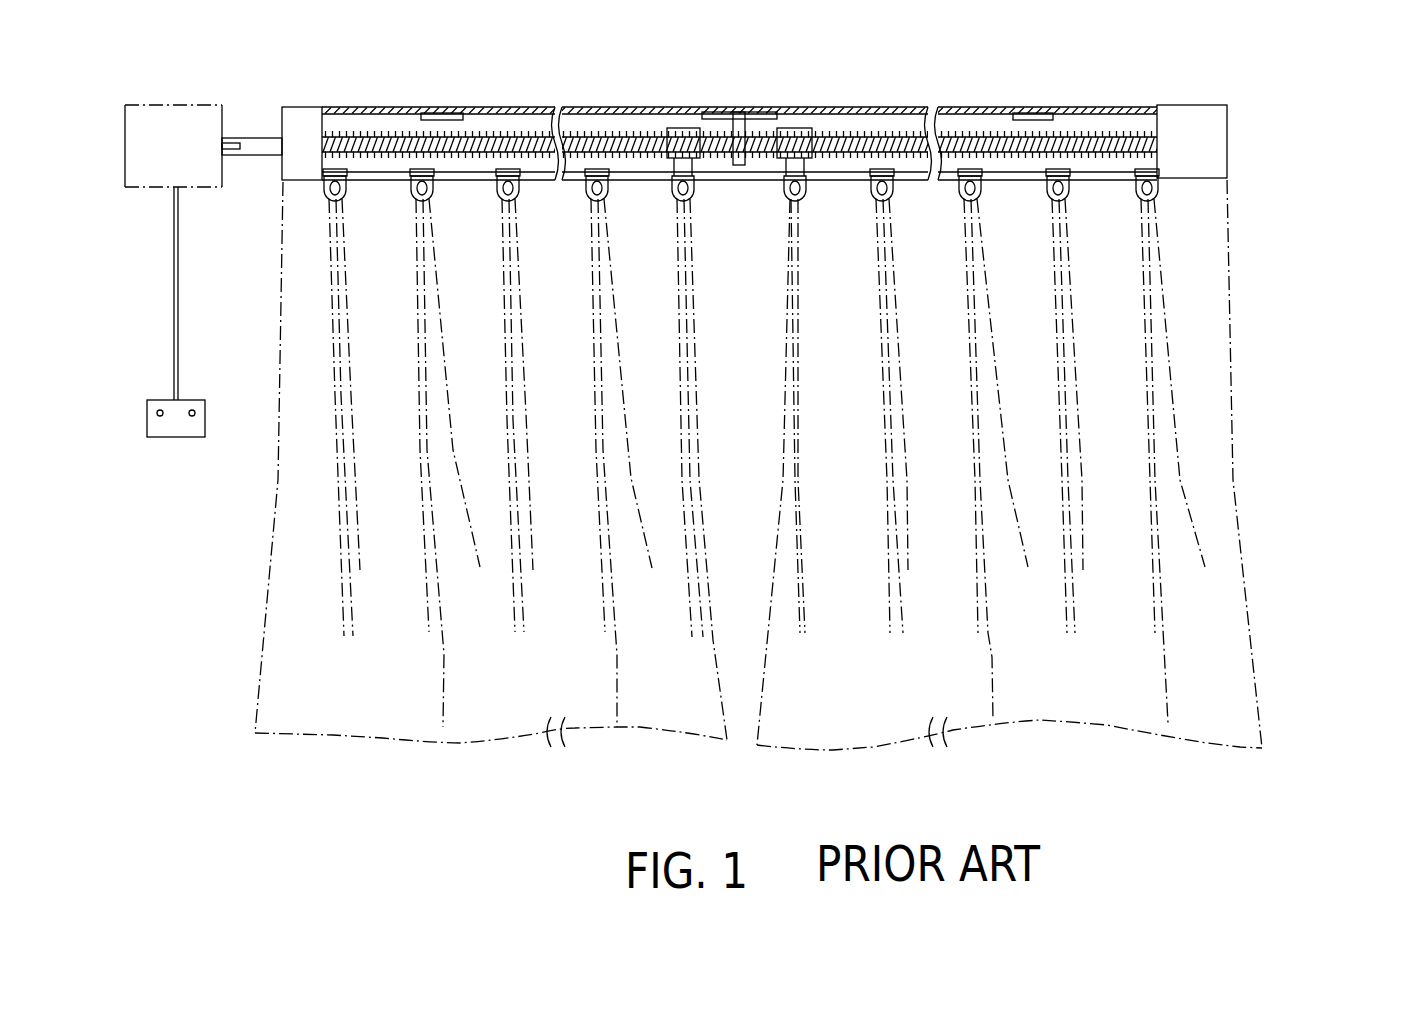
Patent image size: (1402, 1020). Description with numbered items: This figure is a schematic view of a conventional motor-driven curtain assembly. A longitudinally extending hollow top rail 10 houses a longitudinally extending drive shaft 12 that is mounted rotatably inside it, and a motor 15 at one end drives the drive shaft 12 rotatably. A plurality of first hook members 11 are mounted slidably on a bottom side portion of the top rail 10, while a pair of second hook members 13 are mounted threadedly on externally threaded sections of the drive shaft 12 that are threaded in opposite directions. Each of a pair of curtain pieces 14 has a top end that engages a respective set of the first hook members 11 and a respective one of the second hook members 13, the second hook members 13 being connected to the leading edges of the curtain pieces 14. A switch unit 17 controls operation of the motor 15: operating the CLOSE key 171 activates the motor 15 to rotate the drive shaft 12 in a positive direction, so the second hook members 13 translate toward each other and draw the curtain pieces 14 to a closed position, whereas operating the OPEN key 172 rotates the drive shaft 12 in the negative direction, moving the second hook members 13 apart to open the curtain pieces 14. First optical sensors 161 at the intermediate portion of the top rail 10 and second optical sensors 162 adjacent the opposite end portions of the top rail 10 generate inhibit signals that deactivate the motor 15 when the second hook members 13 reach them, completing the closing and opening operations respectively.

The top rail 10 is at (607, 104).
The first hook members 11 is at (982, 184).
The drive shaft 12 is at (904, 128).
The second hook members 13 is at (676, 128).
The curtain pieces 14 is at (288, 556).
The motor 15 is at (163, 105).
The first optical sensors 161 is at (756, 107).
The second optical sensors 162 is at (442, 110).
The switch unit 17 is at (147, 425).
The CLOSE key 171 is at (160, 418).
The OPEN key 172 is at (192, 418).